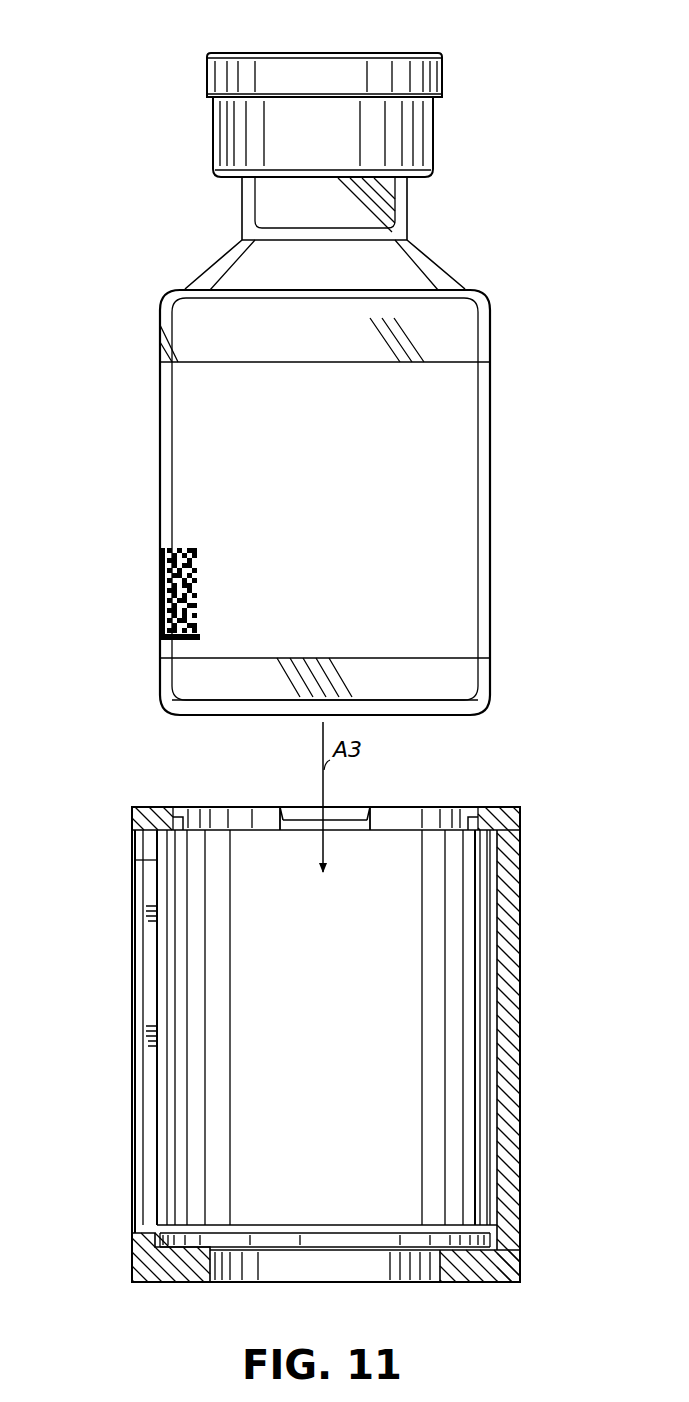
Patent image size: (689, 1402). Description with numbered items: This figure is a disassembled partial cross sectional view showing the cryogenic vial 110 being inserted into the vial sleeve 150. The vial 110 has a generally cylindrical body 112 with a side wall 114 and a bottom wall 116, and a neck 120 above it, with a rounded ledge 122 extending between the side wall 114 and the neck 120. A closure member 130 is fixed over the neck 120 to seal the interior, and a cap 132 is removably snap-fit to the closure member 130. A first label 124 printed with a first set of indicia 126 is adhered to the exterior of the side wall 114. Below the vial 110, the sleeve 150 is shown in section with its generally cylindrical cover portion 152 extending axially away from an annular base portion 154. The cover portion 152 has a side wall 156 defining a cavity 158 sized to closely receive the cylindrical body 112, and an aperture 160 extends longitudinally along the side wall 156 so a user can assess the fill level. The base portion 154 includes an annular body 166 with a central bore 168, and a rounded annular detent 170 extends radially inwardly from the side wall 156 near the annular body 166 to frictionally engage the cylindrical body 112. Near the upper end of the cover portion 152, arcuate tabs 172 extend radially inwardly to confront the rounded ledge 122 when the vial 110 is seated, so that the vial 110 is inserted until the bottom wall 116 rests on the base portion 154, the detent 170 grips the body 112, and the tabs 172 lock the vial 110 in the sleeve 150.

The cryogenic vial 110 is at (143, 47).
The cap 132 is at (447, 77).
The closure member 130 is at (438, 146).
The neck 120 is at (409, 212).
The rounded ledge 122 is at (186, 290).
The cylindrical body 112 is at (151, 343).
The first label 124 is at (165, 532).
The first set of indicia 126 is at (162, 387).
The side wall 114 is at (172, 672).
The bottom wall 116 is at (404, 717).
The vial sleeve 150 is at (101, 805).
The arcuate tabs 172 is at (300, 823).
The cover portion 152 is at (118, 980).
The aperture 160 is at (150, 1110).
The cavity 158 is at (497, 990).
The side wall 156 is at (505, 951).
The annular base portion 154 is at (116, 1246).
The annular body 166 is at (135, 1268).
The central bore 168 is at (437, 1265).
The annular detent 170 is at (472, 1240).